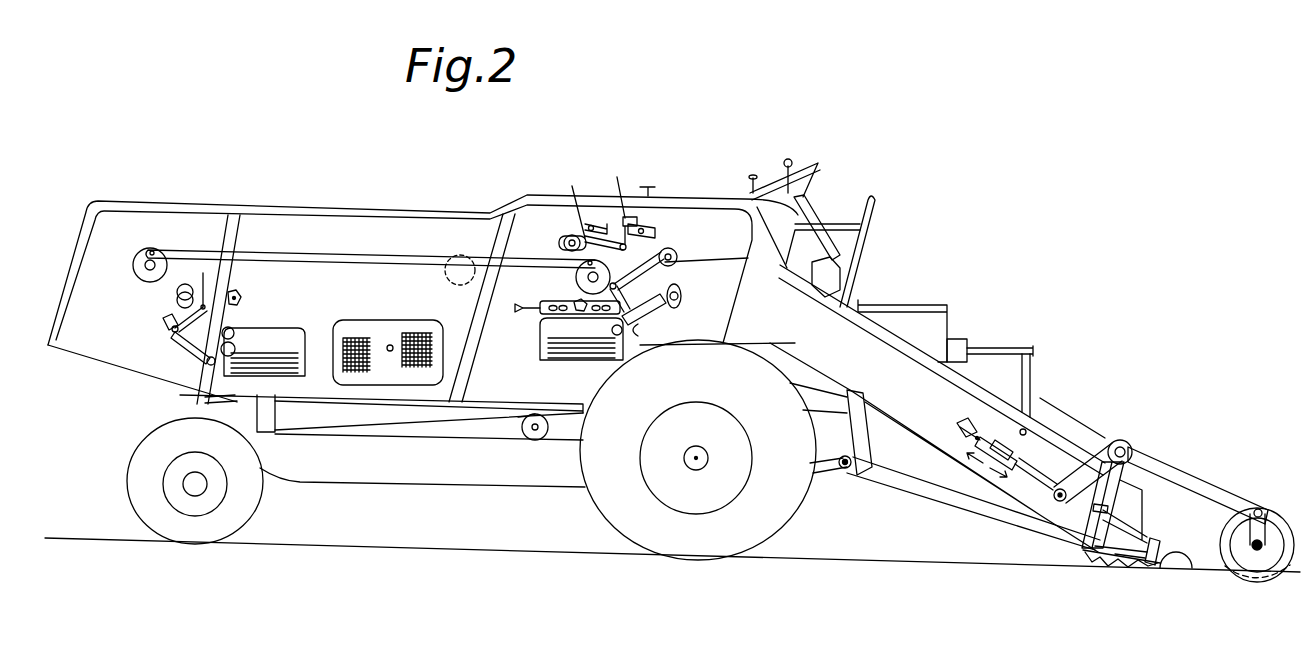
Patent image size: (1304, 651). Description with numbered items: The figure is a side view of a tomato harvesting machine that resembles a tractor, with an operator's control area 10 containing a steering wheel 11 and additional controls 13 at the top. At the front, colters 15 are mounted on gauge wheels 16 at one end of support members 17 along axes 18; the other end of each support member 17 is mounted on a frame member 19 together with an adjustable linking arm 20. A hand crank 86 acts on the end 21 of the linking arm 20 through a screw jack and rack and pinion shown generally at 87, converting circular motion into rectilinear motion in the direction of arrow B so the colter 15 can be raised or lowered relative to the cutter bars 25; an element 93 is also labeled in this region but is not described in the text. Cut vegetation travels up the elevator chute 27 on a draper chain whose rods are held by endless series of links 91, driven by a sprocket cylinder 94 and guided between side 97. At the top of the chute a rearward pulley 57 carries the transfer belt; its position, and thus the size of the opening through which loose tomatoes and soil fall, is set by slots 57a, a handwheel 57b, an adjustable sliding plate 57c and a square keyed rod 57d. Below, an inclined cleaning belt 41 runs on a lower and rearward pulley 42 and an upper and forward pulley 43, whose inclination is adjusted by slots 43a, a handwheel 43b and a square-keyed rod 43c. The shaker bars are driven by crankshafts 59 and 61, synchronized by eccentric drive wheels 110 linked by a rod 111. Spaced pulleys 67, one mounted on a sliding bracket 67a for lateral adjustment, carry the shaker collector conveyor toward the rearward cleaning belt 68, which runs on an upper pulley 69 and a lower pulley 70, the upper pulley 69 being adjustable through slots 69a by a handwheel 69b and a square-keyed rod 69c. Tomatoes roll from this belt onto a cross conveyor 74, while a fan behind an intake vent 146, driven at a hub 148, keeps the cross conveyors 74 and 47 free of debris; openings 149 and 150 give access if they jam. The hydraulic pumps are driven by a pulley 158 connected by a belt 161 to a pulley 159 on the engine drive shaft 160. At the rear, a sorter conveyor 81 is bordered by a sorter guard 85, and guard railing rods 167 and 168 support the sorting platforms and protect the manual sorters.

The operator's control area 10 is at (690, 195).
The steering wheel 11 is at (820, 165).
The additional controls 13 is at (788, 159).
The colters 15 is at (1280, 518).
The gauge wheels 16 is at (1235, 525).
The support members 17 is at (1190, 478).
The axes 18 is at (1250, 545).
The frame member 19 is at (1130, 460).
The adjustable linking arm 20 is at (1113, 447).
The end of adjustable linking arm 21 is at (1076, 478).
The cutter bars 25 is at (1176, 572).
The elevator chute 27 is at (843, 300).
The inclined cleaning belt 41 is at (649, 333).
The lower and rearward pulley 42 is at (612, 330).
The upper and forward pulley 43 is at (681, 297).
The slots 43a is at (677, 288).
The handwheel 43b is at (650, 316).
The square-keyed rod 43c is at (617, 288).
The cross conveyor 47 is at (577, 360).
The rearward pulley 57 is at (572, 235).
The slots 57a is at (559, 243).
The handwheel 57b is at (621, 206).
The adjustable sliding plate 57c is at (600, 229).
The square keyed rod 57d is at (569, 204).
The crankshaft 59 is at (588, 277).
The crankshaft 61 is at (140, 268).
The spaced pulleys 67 is at (238, 294).
The sliding bracket 67a is at (548, 302).
The cleaning belt 68 is at (230, 328).
The upper pulley 69 is at (176, 292).
The slots 69a is at (178, 312).
The handwheel 69b is at (176, 333).
The square-keyed rod 69c is at (190, 286).
The lower pulley 70 is at (235, 349).
The cross conveyor 74 is at (268, 372).
The sorter conveyor 81 is at (920, 304).
The sorter guard 85 is at (962, 336).
The hand crank 86 is at (1022, 430).
The screw jack and rack and pinion 87 is at (960, 430).
The links 91 is at (1106, 562).
The skid plate 93 is at (1125, 568).
The sprocket cylinder 94 is at (680, 242).
The side 97 is at (1062, 437).
The eccentric drive wheels 110 is at (147, 252).
The rod 111 is at (265, 253).
The intake vent 146 is at (354, 335).
The hub 148 is at (391, 345).
The opening 149 is at (545, 328).
The opening 150 is at (287, 328).
The pulley 158 is at (450, 276).
The pulley 159 is at (541, 436).
The drive shaft 160 is at (533, 440).
The belt 161 is at (518, 430).
The guard railing rod 167 is at (1010, 347).
The guard railing rod 168 is at (1032, 384).
The arrow B is at (998, 476).